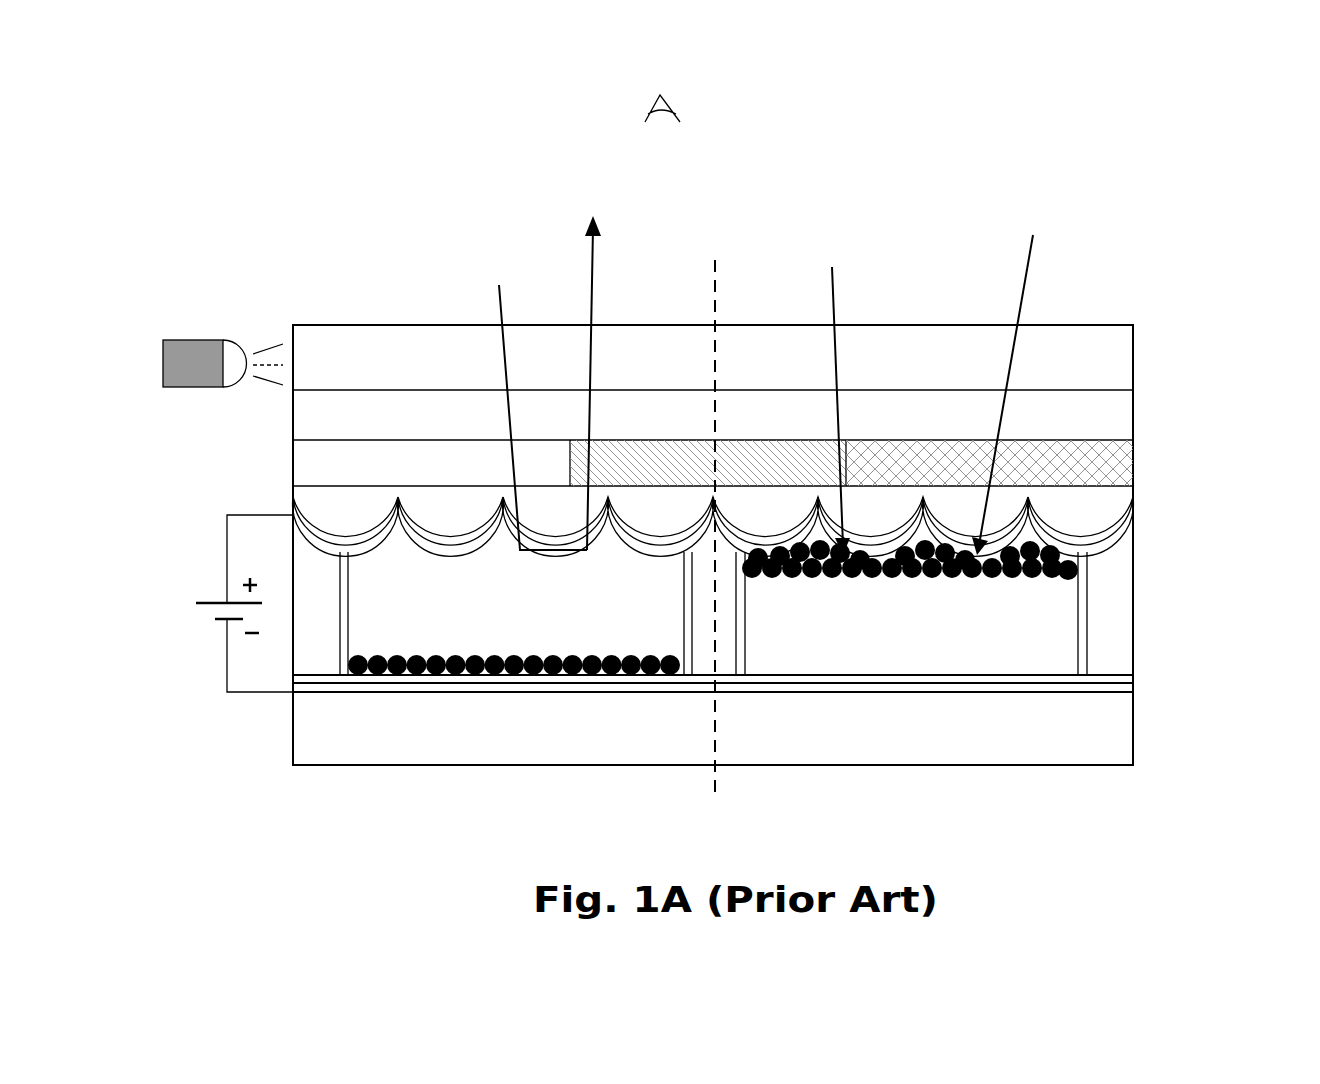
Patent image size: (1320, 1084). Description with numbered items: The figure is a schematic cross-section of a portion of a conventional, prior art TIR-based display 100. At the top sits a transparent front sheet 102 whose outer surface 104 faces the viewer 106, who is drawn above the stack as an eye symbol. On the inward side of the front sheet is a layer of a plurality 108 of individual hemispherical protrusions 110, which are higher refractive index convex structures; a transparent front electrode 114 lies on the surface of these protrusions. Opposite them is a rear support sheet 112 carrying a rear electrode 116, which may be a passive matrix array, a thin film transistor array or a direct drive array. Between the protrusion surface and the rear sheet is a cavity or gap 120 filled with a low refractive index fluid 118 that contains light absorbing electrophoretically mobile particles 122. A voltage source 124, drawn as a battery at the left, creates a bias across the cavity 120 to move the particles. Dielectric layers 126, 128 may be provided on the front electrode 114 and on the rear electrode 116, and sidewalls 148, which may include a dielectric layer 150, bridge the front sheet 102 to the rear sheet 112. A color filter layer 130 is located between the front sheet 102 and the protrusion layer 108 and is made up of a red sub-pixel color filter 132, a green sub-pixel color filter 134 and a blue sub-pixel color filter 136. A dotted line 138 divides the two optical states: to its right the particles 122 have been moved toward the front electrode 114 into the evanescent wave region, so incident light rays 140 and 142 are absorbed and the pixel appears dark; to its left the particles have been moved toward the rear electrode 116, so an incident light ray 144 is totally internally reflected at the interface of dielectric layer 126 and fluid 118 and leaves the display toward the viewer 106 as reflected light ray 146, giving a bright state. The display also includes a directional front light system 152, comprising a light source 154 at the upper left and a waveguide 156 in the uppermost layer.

The TIR-based display 100 is at (1092, 302).
The transparent front sheet 102 is at (367, 433).
The outer surface 104 is at (393, 388).
The viewer 106 is at (668, 102).
The plurality of hemispherical protrusions 108 is at (774, 523).
The hemispherical protrusion 110 is at (485, 528).
The rear support sheet 112 is at (367, 750).
The transparent front electrode 114 is at (365, 548).
The rear electrode 116 is at (497, 693).
The low refractive index fluid 118 is at (713, 607).
The cavity 120 is at (774, 608).
The electrophoretically mobile particles 122 is at (525, 655).
The voltage source 124 is at (227, 568).
The dielectric layer 126 is at (563, 558).
The dielectric layer 128 is at (845, 668).
The color filter layer 130 is at (774, 463).
The red sub-pixel color filter 132 is at (459, 484).
The green sub-pixel color filter 134 is at (697, 484).
The blue sub-pixel color filter 136 is at (969, 484).
The dotted line 138 is at (715, 290).
The incident light ray 140 is at (832, 297).
The incident light ray 142 is at (1030, 253).
The incident light ray 144 is at (500, 308).
The reflected light ray 146 is at (590, 275).
The sidewall 148 is at (320, 590).
The dielectric layer 150 is at (350, 625).
The directional front light system 152 is at (772, 357).
The light source 154 is at (205, 338).
The waveguide 156 is at (952, 378).